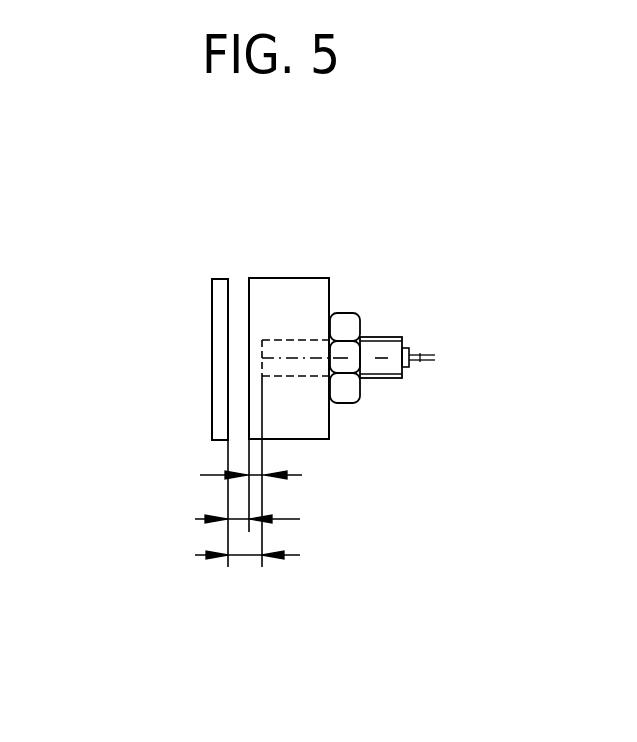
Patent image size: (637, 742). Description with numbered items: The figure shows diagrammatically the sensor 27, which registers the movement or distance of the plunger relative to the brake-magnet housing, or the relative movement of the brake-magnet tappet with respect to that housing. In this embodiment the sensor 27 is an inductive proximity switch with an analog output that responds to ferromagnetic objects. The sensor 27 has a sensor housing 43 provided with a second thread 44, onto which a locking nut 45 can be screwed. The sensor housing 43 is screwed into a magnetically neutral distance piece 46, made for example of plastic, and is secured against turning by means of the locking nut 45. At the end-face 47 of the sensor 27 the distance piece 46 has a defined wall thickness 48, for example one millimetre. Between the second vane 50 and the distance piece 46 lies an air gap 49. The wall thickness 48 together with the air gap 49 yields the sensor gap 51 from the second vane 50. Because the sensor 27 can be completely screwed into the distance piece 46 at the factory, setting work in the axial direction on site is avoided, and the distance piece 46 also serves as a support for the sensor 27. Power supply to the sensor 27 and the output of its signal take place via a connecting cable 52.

The sensor 27 is at (293, 267).
The sensor housing 43 is at (387, 343).
The second thread 44 is at (303, 382).
The locking nut 45 is at (348, 327).
The distance piece 46 is at (305, 440).
The end-face 47 is at (262, 358).
The wall thickness 48 is at (258, 477).
The air gap 49 is at (240, 520).
The second vane 50 is at (222, 348).
The sensor gap 51 is at (243, 560).
The connecting cable 52 is at (420, 352).